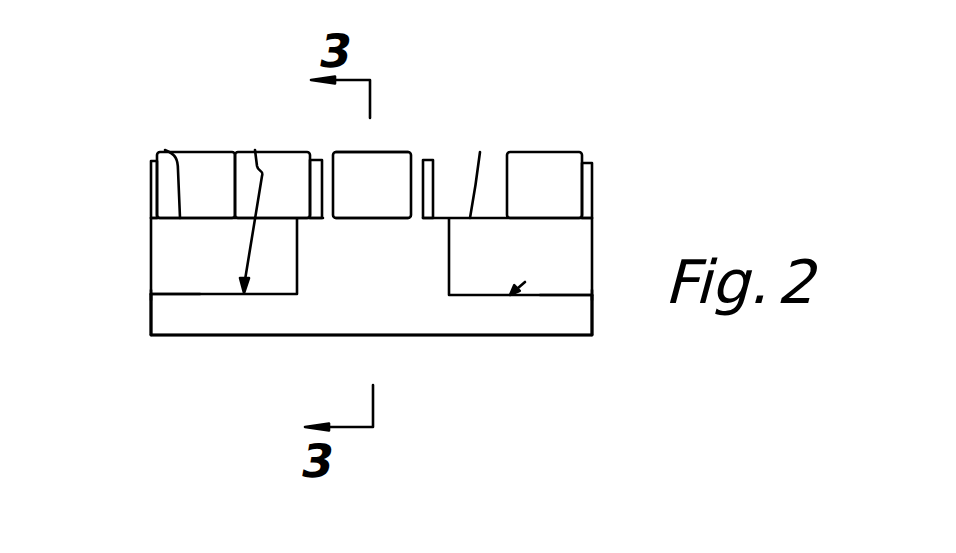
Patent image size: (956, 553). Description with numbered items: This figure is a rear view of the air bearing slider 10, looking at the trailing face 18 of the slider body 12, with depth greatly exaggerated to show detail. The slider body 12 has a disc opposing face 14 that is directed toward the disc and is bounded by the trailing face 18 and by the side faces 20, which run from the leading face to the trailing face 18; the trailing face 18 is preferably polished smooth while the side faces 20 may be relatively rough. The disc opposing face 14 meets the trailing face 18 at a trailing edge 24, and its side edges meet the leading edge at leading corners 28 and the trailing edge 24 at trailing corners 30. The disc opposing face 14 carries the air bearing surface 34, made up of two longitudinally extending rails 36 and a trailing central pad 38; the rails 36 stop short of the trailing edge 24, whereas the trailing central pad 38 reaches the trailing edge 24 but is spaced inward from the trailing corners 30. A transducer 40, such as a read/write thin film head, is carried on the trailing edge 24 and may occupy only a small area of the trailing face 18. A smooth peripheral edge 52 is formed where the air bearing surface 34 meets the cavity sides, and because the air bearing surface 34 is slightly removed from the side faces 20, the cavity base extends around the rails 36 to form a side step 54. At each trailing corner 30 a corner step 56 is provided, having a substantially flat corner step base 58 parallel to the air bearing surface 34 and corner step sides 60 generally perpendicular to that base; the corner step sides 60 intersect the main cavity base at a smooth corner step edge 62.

The air bearing slider 10 is at (593, 83).
The slider body 12 is at (520, 320).
The disc opposing face 14 is at (397, 150).
The trailing face 18 is at (322, 280).
The side faces 20 is at (150, 300).
The trailing edge 24 is at (330, 150).
The leading corners 28 is at (150, 160).
The trailing corners 30 is at (150, 295).
The air bearing surface 34 is at (380, 142).
The rails 36 is at (188, 148).
The trailing central pad 38 is at (357, 150).
The transducer 40 is at (387, 197).
The peripheral edge 52 is at (160, 150).
The side step 54 is at (588, 211).
The corner step 56 is at (255, 150).
The corner step base 58 is at (180, 292).
The corner step sides 60 is at (178, 235).
The corner step edge 62 is at (165, 150).